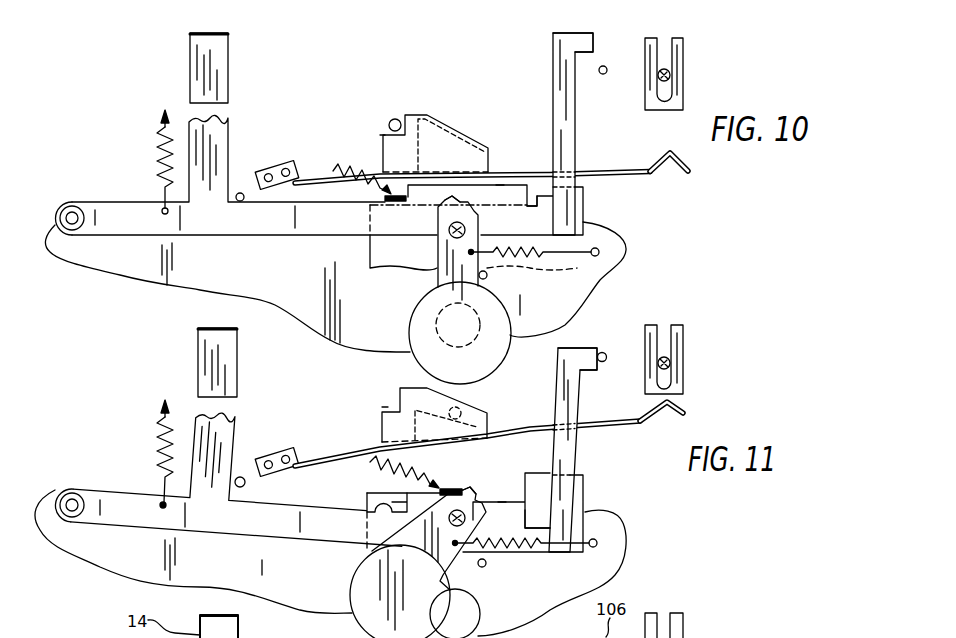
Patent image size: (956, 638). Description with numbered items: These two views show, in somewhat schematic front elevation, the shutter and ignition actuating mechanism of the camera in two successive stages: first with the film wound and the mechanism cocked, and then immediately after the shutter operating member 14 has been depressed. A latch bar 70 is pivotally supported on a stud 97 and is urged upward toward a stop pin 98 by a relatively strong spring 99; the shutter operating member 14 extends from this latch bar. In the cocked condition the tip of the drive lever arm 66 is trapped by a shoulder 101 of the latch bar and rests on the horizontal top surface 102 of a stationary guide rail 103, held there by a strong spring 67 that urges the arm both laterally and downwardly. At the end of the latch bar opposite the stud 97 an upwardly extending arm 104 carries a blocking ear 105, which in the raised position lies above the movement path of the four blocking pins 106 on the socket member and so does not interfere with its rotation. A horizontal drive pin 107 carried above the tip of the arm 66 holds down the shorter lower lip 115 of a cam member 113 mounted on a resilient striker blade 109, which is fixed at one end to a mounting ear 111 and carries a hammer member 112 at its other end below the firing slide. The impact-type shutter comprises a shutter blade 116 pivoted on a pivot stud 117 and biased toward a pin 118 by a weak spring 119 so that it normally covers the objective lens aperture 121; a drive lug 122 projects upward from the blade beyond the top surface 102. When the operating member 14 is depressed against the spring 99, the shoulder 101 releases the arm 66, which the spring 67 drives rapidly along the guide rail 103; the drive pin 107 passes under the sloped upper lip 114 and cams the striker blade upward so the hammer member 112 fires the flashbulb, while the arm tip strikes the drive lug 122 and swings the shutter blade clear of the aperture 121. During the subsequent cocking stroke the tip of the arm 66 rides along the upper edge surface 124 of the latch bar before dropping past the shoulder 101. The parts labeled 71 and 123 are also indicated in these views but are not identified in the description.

In FIG. 10, the shutter operating member 14 is at (218, 53).
In FIG. 11, the shutter operating member 14 is at (202, 352).
In FIG. 10, the drive lever arm 66 is at (407, 193).
In FIG. 11, the drive lever arm 66 is at (458, 490).
In FIG. 10, the spring 67 is at (333, 168).
In FIG. 11, the spring 67 is at (392, 476).
In FIG. 10, the latch bar 70 is at (272, 228).
In FIG. 11, the latch bar 70 is at (260, 525).
In FIG. 10, the slotted bracket 71 is at (683, 68).
In FIG. 11, the slotted bracket 71 is at (683, 357).
In FIG. 10, the stud 97 is at (78, 205).
In FIG. 11, the stud 97 is at (78, 490).
In FIG. 10, the stop pin 98 is at (240, 192).
In FIG. 11, the stop pin 98 is at (240, 477).
In FIG. 10, the spring 99 is at (156, 142).
In FIG. 11, the spring 99 is at (156, 454).
In FIG. 10, the shoulder 101 is at (426, 204).
In FIG. 11, the shoulder 101 is at (392, 514).
In FIG. 10, the horizontal top surface 102 is at (388, 207).
In FIG. 11, the horizontal top surface 102 is at (367, 500).
In FIG. 10, the guide rail 103 is at (585, 210).
In FIG. 11, the guide rail 103 is at (585, 489).
In FIG. 10, the upwardly extending arm 104 is at (575, 143).
In FIG. 11, the upwardly extending arm 104 is at (555, 400).
In FIG. 10, the blocking ear 105 is at (593, 45).
In FIG. 11, the blocking ear 105 is at (598, 370).
In FIG. 10, the blocking pins 106 is at (603, 74).
In FIG. 11, the blocking pins 106 is at (604, 352).
In FIG. 10, the drive pin 107 is at (395, 118).
In FIG. 11, the drive pin 107 is at (487, 423).
In FIG. 10, the striker blade 109 is at (628, 177).
In FIG. 11, the striker blade 109 is at (610, 430).
In FIG. 10, the mounting ear 111 is at (277, 160).
In FIG. 11, the mounting ear 111 is at (277, 447).
In FIG. 10, the hammer member 112 is at (690, 165).
In FIG. 11, the hammer member 112 is at (688, 401).
In FIG. 10, the cam member 113 is at (448, 142).
In FIG. 11, the cam member 113 is at (383, 428).
In FIG. 10, the sloped upper lip 114 is at (441, 113).
In FIG. 11, the sloped upper lip 114 is at (457, 396).
In FIG. 10, the lower lip 115 is at (383, 134).
In FIG. 11, the lower lip 115 is at (385, 407).
In FIG. 10, the shutter blade 116 is at (508, 326).
In FIG. 11, the shutter blade 116 is at (354, 588).
In FIG. 10, the pivot stud 117 is at (467, 224).
In FIG. 11, the pivot stud 117 is at (479, 517).
In FIG. 10, the pin 118 is at (490, 278).
In FIG. 11, the pin 118 is at (488, 566).
In FIG. 10, the spring 119 is at (547, 263).
In FIG. 11, the spring 119 is at (545, 552).
In FIG. 10, the objective lens aperture 121 is at (436, 338).
In FIG. 11, the objective lens aperture 121 is at (481, 618).
In FIG. 10, the drive lug 122 is at (456, 198).
In FIG. 11, the drive lug 122 is at (470, 484).
In FIG. 10, the notch 123 is at (533, 196).
In FIG. 11, the notch 123 is at (545, 452).
In FIG. 10, the upper edge surface 124 is at (499, 184).
In FIG. 11, the upper edge surface 124 is at (502, 500).